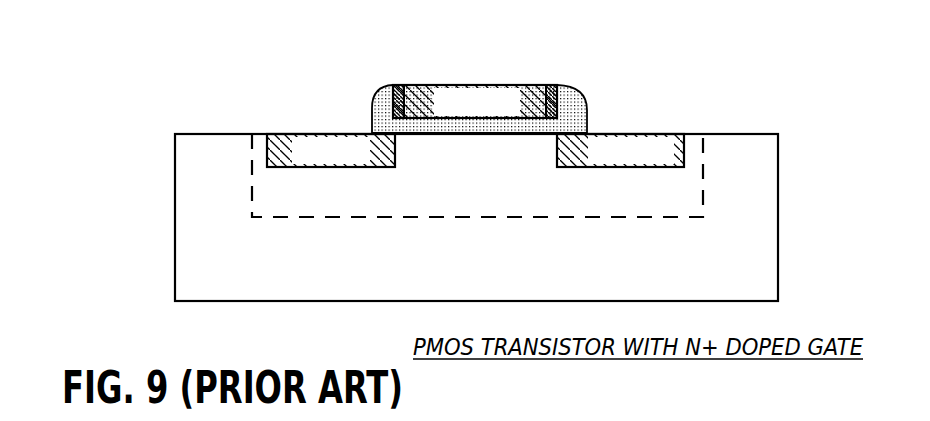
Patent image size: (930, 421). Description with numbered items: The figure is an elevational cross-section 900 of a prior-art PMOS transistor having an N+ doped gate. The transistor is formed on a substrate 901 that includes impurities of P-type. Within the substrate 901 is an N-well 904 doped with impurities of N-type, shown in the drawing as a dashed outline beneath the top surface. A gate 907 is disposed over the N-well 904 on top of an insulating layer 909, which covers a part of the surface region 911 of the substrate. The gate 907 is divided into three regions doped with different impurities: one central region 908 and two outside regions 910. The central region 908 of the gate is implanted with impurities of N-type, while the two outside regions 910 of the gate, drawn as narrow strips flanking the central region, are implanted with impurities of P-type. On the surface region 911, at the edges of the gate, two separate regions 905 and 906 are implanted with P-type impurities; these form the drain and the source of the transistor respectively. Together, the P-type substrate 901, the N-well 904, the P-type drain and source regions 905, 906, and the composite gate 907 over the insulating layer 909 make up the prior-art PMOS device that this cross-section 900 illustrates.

The elevational cross-section 900 is at (148, 74).
The substrate 901 is at (497, 276).
The N-well 904 is at (491, 206).
The drain region 905 is at (332, 158).
The source region 906 is at (628, 158).
The gate 907 is at (560, 46).
The central region of gate 908 is at (474, 114).
The insulating layer 909 is at (582, 108).
The outside regions of gate 910 is at (398, 85).
The surface region 911 is at (730, 133).